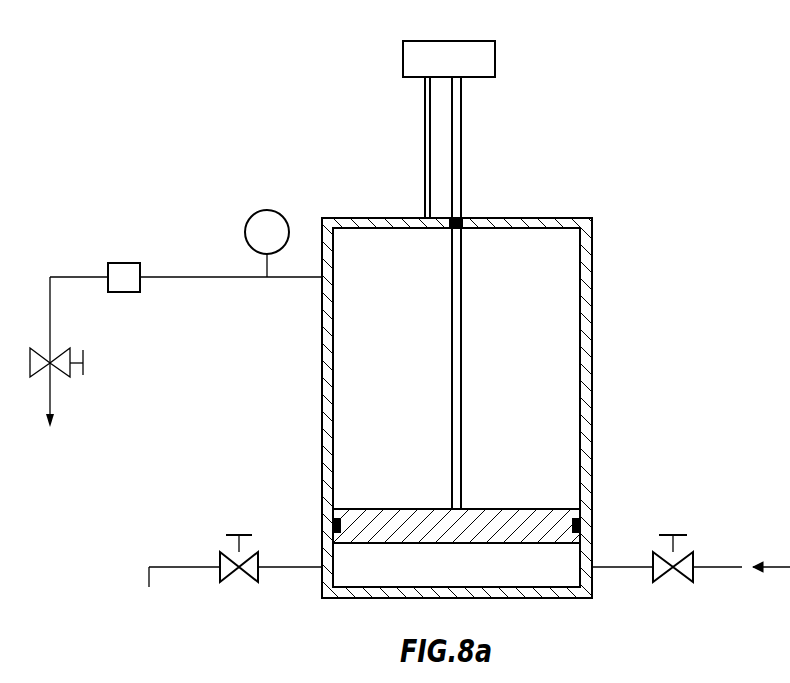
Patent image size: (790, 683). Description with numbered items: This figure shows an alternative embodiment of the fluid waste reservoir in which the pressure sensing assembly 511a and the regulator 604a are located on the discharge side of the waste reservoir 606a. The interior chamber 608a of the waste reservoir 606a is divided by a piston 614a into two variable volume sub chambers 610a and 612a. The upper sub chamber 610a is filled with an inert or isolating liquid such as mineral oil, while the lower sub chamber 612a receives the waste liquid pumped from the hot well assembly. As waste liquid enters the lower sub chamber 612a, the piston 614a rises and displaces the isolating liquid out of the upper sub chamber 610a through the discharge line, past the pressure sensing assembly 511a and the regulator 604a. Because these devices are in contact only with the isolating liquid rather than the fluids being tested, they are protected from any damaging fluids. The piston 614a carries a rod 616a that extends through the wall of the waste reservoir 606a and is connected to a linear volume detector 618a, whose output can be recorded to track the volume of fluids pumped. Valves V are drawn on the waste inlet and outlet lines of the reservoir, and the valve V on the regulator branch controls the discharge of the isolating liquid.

The pressure sensing assembly 511a is at (255, 213).
The regulator 604a is at (126, 263).
The waste reservoir 606a is at (314, 372).
The chamber 608a is at (558, 310).
The sub chamber 610a is at (540, 263).
The sub chamber 612a is at (405, 567).
The piston 614a is at (533, 522).
The rod 616a is at (462, 110).
The linear volume detector 618a is at (497, 63).
The valve V is at (233, 577).